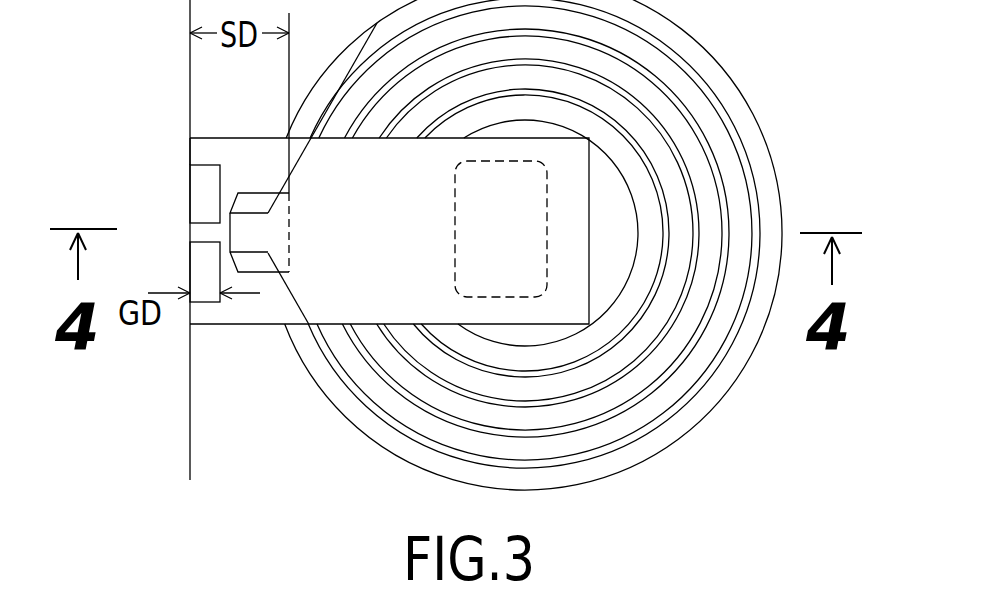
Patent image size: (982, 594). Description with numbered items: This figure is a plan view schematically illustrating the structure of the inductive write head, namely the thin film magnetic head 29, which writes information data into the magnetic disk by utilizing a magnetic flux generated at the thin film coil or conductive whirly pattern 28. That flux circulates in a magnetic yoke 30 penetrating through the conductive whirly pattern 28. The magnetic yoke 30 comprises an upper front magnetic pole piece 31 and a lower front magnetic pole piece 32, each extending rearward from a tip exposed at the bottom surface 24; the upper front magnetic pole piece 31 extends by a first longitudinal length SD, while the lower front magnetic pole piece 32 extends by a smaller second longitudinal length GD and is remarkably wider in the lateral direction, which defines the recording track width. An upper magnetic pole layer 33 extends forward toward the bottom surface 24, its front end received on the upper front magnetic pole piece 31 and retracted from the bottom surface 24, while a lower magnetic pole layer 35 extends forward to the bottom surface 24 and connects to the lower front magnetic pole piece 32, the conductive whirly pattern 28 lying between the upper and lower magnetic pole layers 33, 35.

The bottom surface 24 is at (190, 75).
The conductive whirly pattern 28 is at (713, 60).
The thin film magnetic head 29 is at (742, 400).
The magnetic yoke 30 is at (232, 328).
The upper front magnetic pole piece 31 is at (230, 215).
The lower front magnetic pole piece 32 is at (192, 258).
The upper magnetic pole layer 33 is at (283, 187).
The lower magnetic pole layer 35 is at (190, 147).